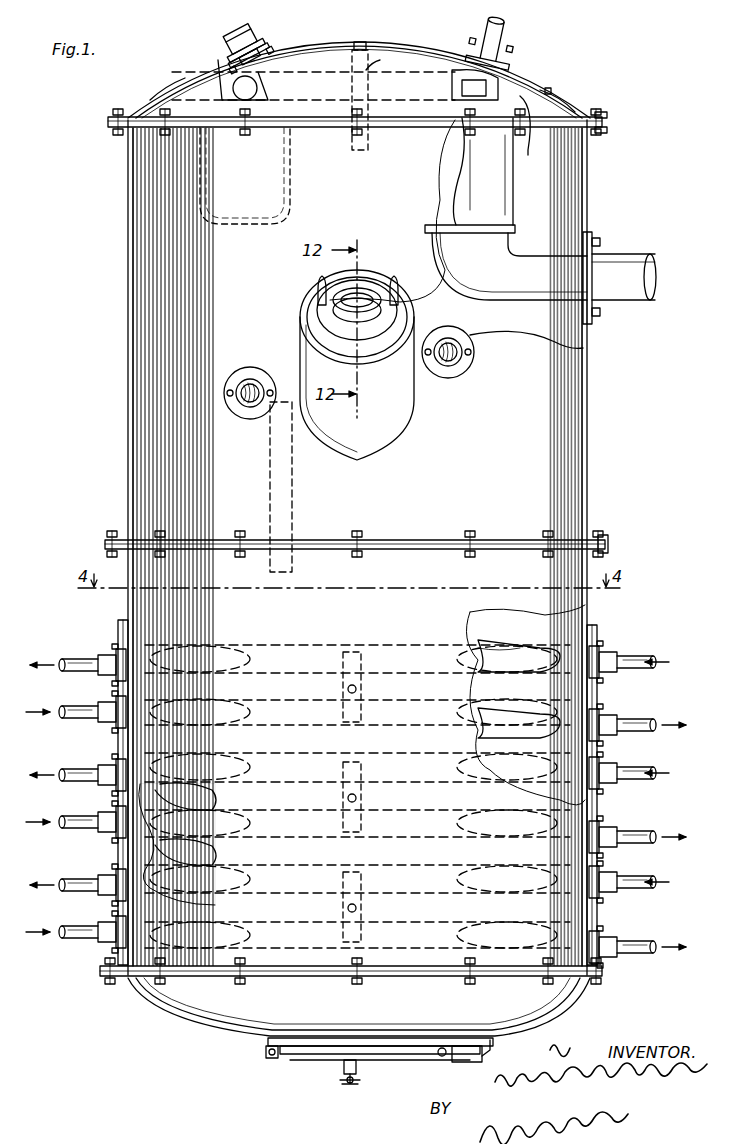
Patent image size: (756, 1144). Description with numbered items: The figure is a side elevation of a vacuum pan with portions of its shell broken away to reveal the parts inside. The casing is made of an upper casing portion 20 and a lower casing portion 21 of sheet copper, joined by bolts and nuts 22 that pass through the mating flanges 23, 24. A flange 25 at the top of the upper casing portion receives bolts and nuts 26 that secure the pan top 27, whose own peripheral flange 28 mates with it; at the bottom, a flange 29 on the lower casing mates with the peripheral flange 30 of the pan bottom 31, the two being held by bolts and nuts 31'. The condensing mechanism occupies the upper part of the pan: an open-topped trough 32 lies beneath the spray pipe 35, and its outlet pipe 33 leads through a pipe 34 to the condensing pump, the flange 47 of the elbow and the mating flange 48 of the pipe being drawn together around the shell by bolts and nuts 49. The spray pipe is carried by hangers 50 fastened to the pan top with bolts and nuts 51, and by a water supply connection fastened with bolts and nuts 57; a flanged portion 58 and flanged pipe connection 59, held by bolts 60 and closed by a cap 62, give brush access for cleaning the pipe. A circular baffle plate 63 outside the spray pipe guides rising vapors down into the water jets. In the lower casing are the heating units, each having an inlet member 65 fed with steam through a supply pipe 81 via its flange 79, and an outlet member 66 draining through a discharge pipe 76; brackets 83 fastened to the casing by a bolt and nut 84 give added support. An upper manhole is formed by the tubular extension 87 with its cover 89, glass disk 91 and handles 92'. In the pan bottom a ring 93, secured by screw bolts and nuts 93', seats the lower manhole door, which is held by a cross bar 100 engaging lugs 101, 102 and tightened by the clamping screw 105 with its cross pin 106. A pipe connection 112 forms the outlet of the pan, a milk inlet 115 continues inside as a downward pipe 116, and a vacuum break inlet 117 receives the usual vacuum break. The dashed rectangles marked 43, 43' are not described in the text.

The upper casing portion 20 is at (588, 408).
The lower casing portion 21 is at (126, 620).
The bolts and nuts 22 is at (432, 537).
The flange 23 is at (606, 540).
The flange 24 is at (608, 548).
The flange 25 is at (603, 132).
The bolts and nuts 26 is at (603, 113).
The pan top 27 is at (390, 48).
The flange 28 is at (110, 118).
The flange 29 is at (102, 966).
The peripheral flange 30 is at (104, 976).
The pan bottom 31 is at (359, 1012).
The bolts and nuts 31' is at (417, 990).
The trough 32 is at (505, 174).
The outlet pipe 33 is at (530, 262).
The pipe 34 is at (642, 256).
The spray pipe 35 is at (470, 104).
The strap 43 is at (148, 89).
The dashed duct 43' is at (284, 137).
The flange 47 is at (580, 316).
The mating flange 48 is at (594, 238).
The bolts and nuts 49 is at (600, 242).
The hangers 50 is at (376, 58).
The bolts and nuts 51 is at (350, 46).
The bolts and nuts 57 is at (474, 50).
The flanged portion 58 is at (282, 54).
The flanged pipe connection 59 is at (222, 54).
The bolts 60 is at (262, 48).
The cap 62 is at (232, 36).
The baffle plate 63 is at (525, 95).
The inlet member 65 is at (498, 652).
The outlet member 66 is at (498, 712).
The discharge pipe 76 is at (80, 658).
The flange 79 is at (592, 640).
The supply pipe 81 is at (88, 706).
The brackets 83 is at (362, 652).
The bolt and nut 84 is at (358, 689).
The tubular extension 87 is at (388, 428).
The cover 89 is at (318, 330).
The glass disk 91 is at (368, 312).
The handles 92' is at (338, 276).
The ring 93 is at (353, 1053).
The screw bolts and nuts 93' is at (380, 1069).
The cross bar 100 is at (372, 1062).
The lug 101 is at (446, 1058).
The lug 102 is at (268, 1058).
The clamping screw 105 is at (356, 1086).
The cross pin 106 is at (342, 1084).
The pipe connection 112 is at (494, 1048).
The milk inlet 115 is at (256, 382).
The pipe 116 is at (292, 490).
The vacuum break inlet 117 is at (462, 362).